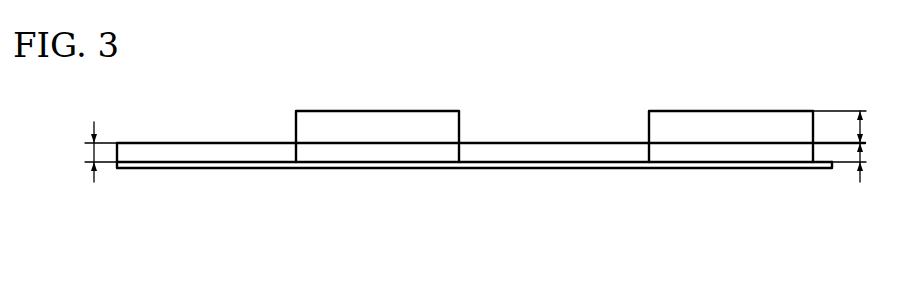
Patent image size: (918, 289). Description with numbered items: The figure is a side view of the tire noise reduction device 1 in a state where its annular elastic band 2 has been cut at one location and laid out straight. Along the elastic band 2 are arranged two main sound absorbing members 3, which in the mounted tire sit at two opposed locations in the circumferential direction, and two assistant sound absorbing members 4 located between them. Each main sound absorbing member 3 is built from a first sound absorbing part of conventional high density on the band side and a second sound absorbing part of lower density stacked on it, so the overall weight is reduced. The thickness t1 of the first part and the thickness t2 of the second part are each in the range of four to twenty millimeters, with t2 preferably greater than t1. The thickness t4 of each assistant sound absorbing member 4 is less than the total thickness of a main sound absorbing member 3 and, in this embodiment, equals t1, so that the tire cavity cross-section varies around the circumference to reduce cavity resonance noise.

The tire noise reduction device 1 is at (617, 169).
The annular elastic band 2 is at (515, 167).
The main sound absorbing member 3 is at (408, 111).
The assistant sound absorbing member 4 is at (255, 143).
The thickness of the first sound absorbing part t1 is at (861, 162).
The thickness of the second sound absorbing part t2 is at (851, 127).
The thickness of the assistant sound absorbing member t4 is at (100, 137).